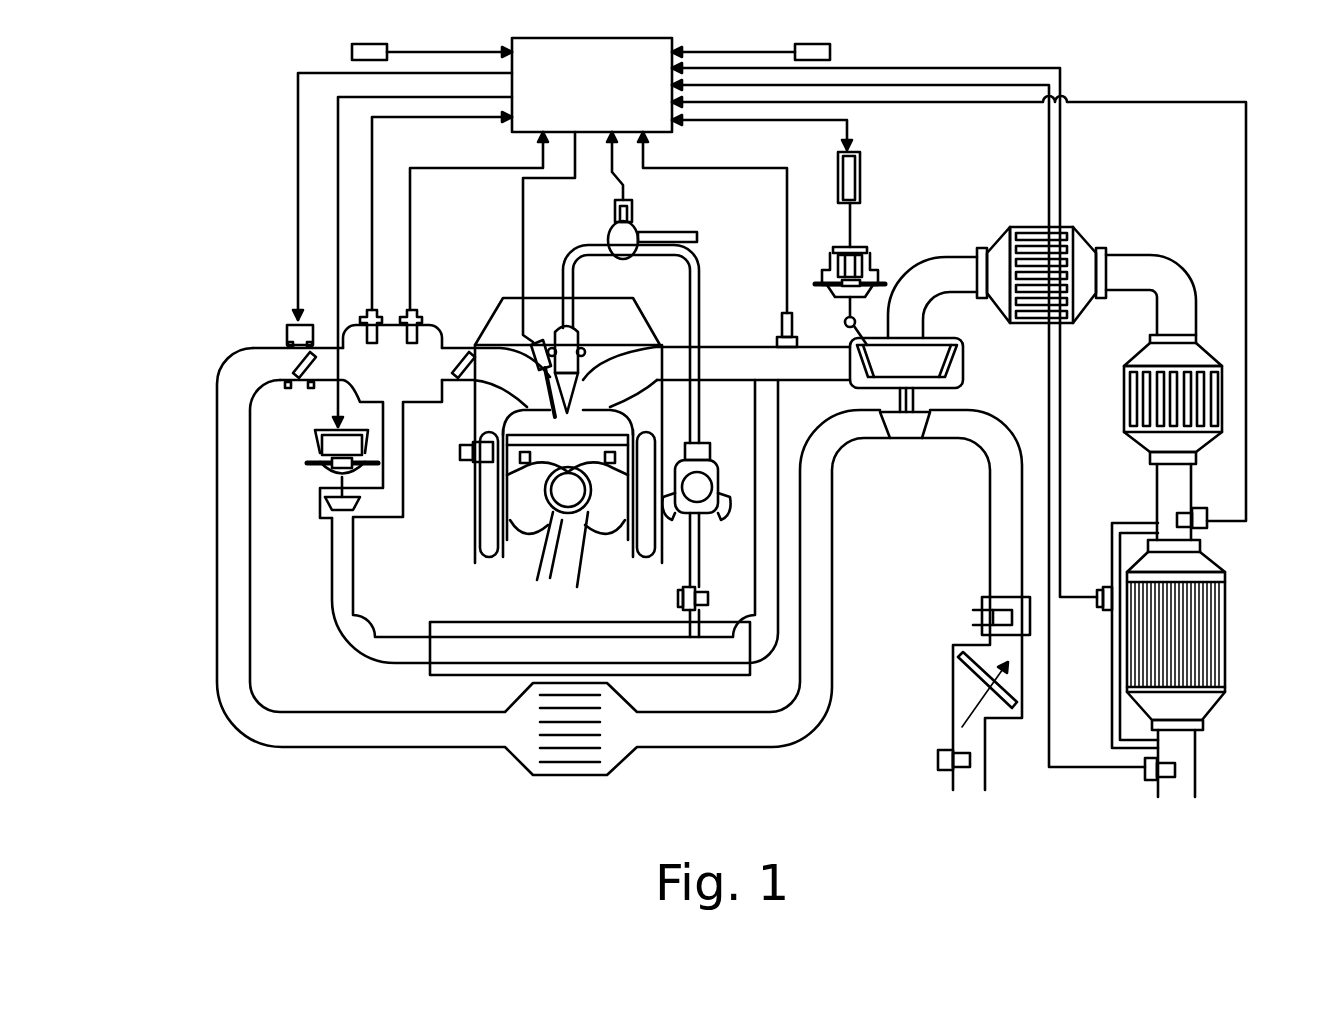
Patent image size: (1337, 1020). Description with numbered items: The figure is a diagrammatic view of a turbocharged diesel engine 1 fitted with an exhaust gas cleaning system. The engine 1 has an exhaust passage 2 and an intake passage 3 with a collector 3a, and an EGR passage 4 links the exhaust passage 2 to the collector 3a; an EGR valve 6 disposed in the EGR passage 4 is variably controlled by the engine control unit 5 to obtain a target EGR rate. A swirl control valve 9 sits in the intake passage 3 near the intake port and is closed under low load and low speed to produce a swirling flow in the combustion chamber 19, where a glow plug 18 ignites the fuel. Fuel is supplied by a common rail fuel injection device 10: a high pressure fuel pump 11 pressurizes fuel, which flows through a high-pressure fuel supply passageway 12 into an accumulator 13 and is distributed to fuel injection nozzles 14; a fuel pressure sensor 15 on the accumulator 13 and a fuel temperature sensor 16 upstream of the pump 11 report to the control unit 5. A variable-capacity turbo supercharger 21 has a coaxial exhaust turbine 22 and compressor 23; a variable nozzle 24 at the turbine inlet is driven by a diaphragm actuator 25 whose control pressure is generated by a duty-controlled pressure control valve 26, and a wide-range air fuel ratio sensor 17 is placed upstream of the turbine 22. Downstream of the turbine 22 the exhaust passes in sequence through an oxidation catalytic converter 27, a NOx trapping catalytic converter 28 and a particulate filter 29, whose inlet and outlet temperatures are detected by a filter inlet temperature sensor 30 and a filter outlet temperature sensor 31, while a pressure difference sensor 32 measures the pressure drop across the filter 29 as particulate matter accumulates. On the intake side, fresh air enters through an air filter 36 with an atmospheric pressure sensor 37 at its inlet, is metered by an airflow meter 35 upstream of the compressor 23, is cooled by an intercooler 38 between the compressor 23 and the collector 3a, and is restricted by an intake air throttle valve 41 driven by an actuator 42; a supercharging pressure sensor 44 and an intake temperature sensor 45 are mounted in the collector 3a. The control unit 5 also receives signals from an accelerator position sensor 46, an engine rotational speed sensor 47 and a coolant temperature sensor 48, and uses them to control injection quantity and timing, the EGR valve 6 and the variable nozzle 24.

The diesel engine 1 is at (465, 548).
The exhaust passage 2 is at (730, 347).
The intake passage 3 is at (232, 547).
The collector 3a is at (347, 326).
The EGR passage 4 is at (338, 645).
The engine control unit 5 is at (674, 131).
The EGR valve 6 is at (325, 505).
The swirl control valve 9 is at (456, 366).
The common rail fuel injection device 10 is at (590, 232).
The high pressure fuel pump 11 is at (712, 468).
The high-pressure fuel supply passageway 12 is at (695, 258).
The accumulator 13 is at (623, 248).
The fuel injection nozzle 14 is at (580, 345).
The fuel pressure sensor 15 is at (632, 204).
The fuel temperature sensor 16 is at (678, 597).
The air fuel ratio sensor 17 is at (780, 316).
The glow plug 18 is at (550, 325).
The combustion chamber 19 is at (612, 425).
The variable-capacity turbo supercharger 21 is at (970, 393).
The exhaust turbine 22 is at (928, 350).
The compressor 23 is at (925, 425).
The variable nozzle 24 is at (850, 345).
The diaphragm actuator 25 is at (855, 250).
The pressure control valve 26 is at (860, 176).
The oxidation catalytic converter 27 is at (1028, 228).
The NOx trapping catalytic converter 28 is at (1124, 385).
The particulate filter 29 is at (1228, 645).
The filter inlet temperature sensor 30 is at (1207, 522).
The filter outlet temperature sensor 31 is at (1145, 775).
The pressure difference sensor 32 is at (1100, 608).
The airflow meter 35 is at (982, 603).
The air filter 36 is at (968, 682).
The atmospheric pressure sensor 37 is at (938, 758).
The intercooler 38 is at (612, 745).
The intake air throttle valve 41 is at (296, 365).
The actuator 42 is at (287, 330).
The supercharging pressure sensor 44 is at (378, 308).
The intake temperature sensor 45 is at (414, 308).
The accelerator position sensor 46 is at (352, 52).
The engine rotational speed sensor 47 is at (830, 52).
The temperature sensor 48 is at (462, 452).